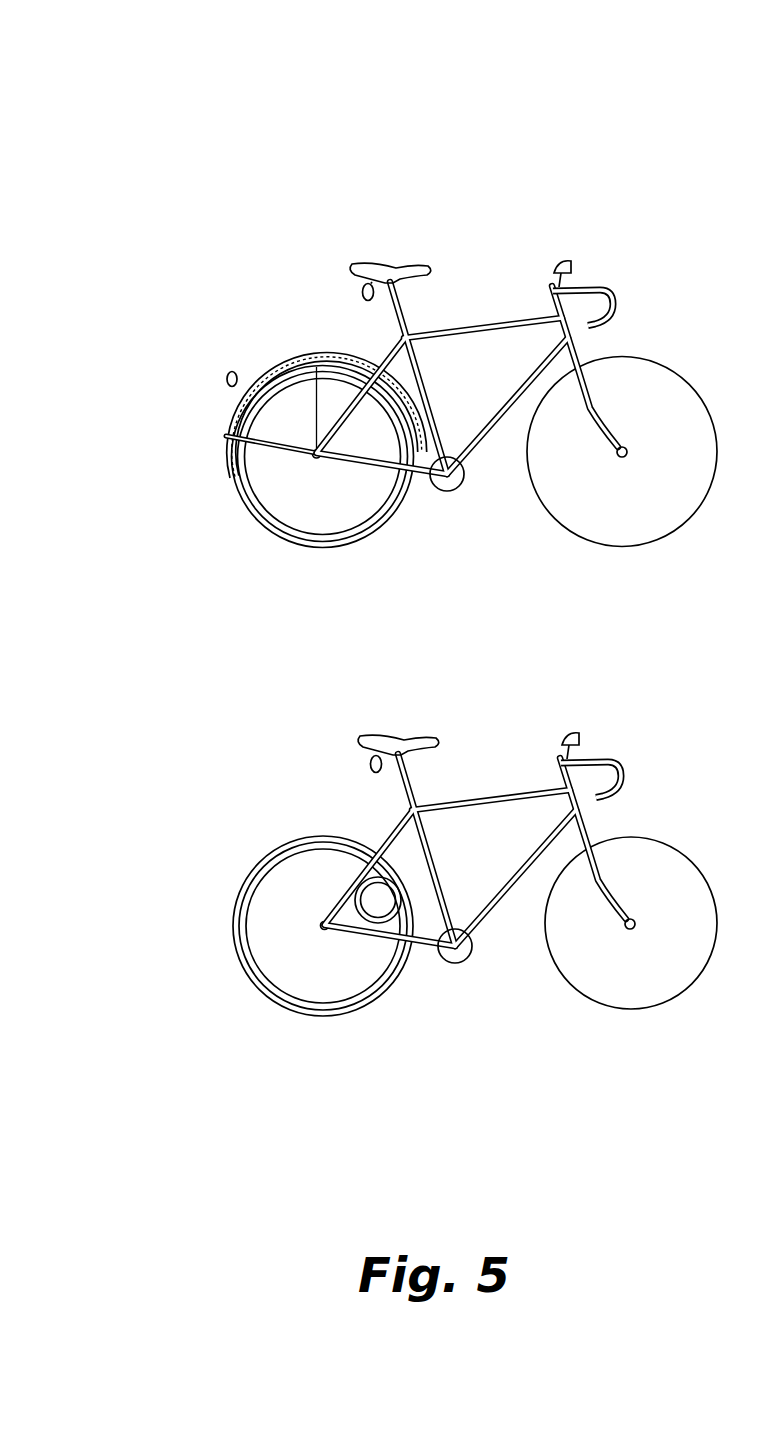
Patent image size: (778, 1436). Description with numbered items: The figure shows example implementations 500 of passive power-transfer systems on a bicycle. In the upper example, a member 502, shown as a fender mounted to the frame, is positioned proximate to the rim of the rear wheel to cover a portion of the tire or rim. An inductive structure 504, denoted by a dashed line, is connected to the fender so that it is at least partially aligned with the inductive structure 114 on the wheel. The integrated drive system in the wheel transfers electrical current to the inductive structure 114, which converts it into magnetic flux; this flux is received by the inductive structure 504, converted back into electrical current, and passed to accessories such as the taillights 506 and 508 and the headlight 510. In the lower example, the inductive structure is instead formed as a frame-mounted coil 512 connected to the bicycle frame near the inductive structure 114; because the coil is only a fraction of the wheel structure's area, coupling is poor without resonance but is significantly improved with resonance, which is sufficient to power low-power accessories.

The example implementations of passive power-transfer systems 500 is at (128, 62).
The inductive structure on the wheel 114 is at (233, 488).
The member 502 is at (282, 348).
The inductive structure 504 is at (224, 430).
The taillight 506 is at (363, 289).
The taillight 508 is at (227, 374).
The headlight 510 is at (570, 255).
The frame-mounted coil 512 is at (377, 924).